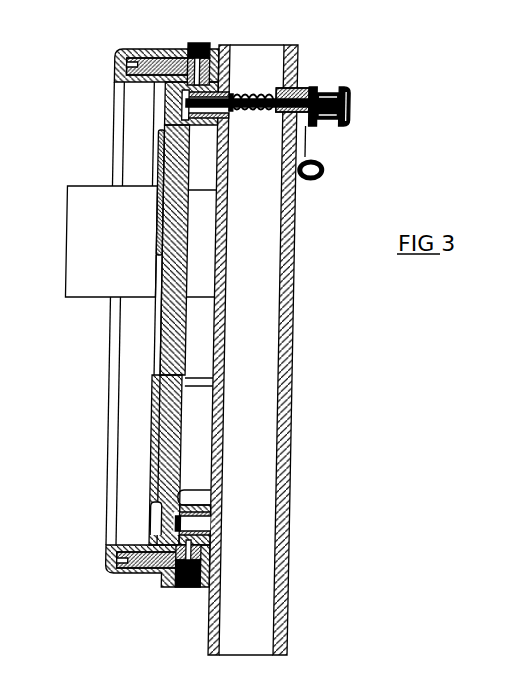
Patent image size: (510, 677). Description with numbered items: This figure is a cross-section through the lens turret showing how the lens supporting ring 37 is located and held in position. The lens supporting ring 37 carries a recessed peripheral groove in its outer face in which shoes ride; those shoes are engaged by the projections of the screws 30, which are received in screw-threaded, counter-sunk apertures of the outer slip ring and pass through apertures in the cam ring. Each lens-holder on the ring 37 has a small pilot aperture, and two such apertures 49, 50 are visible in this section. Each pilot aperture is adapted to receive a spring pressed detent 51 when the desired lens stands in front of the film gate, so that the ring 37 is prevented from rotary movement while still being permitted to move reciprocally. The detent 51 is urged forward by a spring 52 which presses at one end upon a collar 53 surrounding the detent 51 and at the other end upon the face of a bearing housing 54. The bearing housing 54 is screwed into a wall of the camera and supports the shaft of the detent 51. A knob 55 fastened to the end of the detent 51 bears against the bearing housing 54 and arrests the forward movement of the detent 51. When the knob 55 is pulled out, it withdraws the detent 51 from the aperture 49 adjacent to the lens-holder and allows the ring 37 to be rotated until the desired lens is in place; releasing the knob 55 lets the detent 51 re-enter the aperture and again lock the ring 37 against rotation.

The projecting screw 30 is at (198, 50).
The lens supporting ring 37 is at (166, 83).
The pilot aperture 49 is at (183, 107).
The pilot aperture 50 is at (181, 523).
The spring pressed detent 51 is at (234, 98).
The spring 52 is at (268, 109).
The collar 53 is at (233, 111).
The bearing housing 54 is at (305, 92).
The knob 55 is at (352, 103).